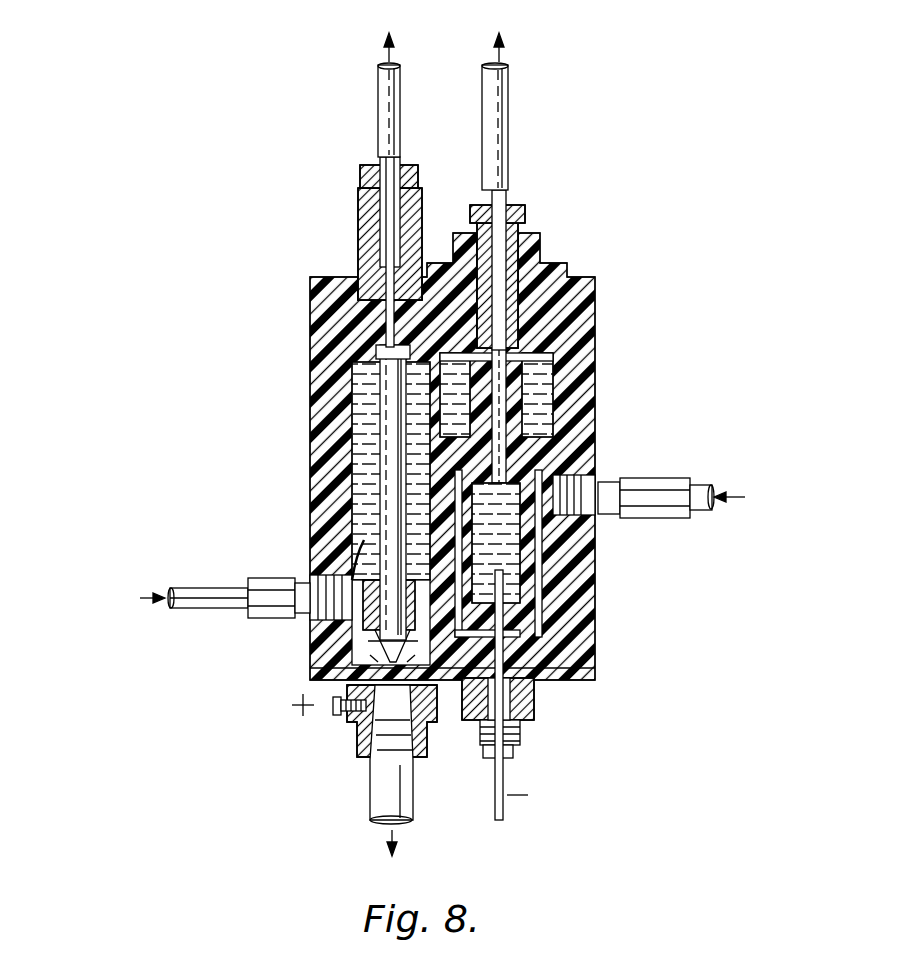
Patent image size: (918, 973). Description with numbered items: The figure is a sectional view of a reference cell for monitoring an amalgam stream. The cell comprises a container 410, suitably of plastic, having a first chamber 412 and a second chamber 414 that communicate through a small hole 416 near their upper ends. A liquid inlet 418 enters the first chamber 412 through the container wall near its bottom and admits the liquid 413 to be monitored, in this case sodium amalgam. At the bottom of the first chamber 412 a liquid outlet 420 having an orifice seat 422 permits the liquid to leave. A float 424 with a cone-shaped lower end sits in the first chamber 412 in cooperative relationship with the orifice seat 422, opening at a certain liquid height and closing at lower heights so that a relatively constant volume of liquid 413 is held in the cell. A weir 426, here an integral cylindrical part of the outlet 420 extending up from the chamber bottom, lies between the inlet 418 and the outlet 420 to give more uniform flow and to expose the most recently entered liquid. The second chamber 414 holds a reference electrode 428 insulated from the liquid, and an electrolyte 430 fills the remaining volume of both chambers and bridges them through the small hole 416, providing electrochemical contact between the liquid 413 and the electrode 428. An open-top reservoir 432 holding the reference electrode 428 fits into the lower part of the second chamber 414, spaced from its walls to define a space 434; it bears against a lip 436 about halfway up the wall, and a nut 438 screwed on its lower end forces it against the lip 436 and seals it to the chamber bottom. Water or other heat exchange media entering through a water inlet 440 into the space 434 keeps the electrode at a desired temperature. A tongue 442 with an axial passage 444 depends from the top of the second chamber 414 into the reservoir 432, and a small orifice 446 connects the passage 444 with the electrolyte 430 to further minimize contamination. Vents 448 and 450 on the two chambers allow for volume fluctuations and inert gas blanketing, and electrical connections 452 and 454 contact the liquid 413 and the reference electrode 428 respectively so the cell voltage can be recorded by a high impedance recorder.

The container 410 is at (587, 317).
The first chamber 412 is at (367, 418).
The liquid 413 is at (352, 640).
The second chamber 414 is at (577, 423).
The small hole 416 is at (407, 363).
The liquid inlet 418 is at (202, 593).
The liquid outlet 420 is at (360, 752).
The orifice seat 422 is at (317, 677).
The float 424 is at (380, 467).
The weir 426 is at (352, 543).
The reference electrode 428 is at (582, 550).
The electrolyte 430 is at (352, 380).
The reservoir 432 is at (540, 616).
The space 434 is at (513, 633).
The lip 436 is at (573, 462).
The nut 438 is at (535, 706).
The water inlet 440 is at (693, 490).
The tongue 442 is at (593, 395).
The axial passage 444 is at (498, 543).
The small orifice 446 is at (482, 377).
The vent 448 is at (383, 103).
The vent 450 is at (492, 112).
The electrical connection 452 is at (343, 712).
The electrical connection 454 is at (497, 778).